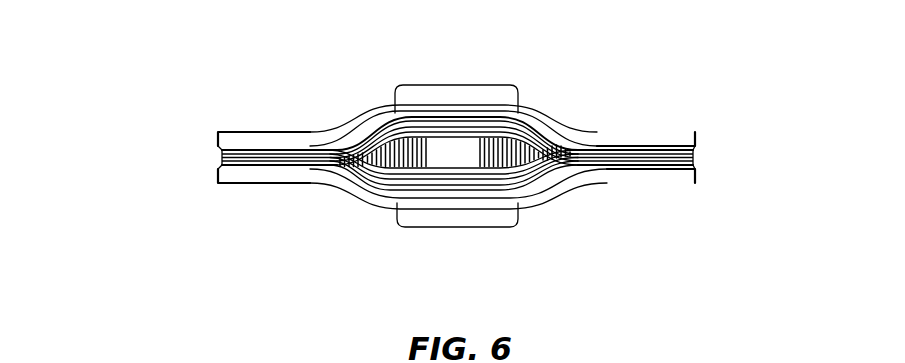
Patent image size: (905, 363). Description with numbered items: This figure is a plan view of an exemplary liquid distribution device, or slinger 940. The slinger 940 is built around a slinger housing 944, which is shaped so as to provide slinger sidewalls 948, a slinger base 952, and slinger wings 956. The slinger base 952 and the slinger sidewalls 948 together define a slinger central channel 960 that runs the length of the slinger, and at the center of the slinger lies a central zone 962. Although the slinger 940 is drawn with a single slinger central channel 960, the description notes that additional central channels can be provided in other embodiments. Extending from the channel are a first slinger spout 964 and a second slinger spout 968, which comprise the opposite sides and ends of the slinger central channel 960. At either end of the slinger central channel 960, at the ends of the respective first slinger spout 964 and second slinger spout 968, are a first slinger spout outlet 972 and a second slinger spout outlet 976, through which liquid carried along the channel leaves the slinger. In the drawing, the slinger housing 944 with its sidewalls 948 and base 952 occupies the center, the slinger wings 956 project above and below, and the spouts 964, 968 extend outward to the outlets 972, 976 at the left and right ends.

The liquid distribution device or slinger 940 is at (438, 167).
The slinger housing 944 is at (566, 130).
The slinger sidewalls 948 is at (350, 123).
The slinger base 952 is at (473, 168).
The slinger wings 956 is at (472, 97).
The slinger central channel 960 is at (502, 159).
The central zone 962 is at (502, 157).
The first slinger spout 964 is at (267, 158).
The second slinger spout 968 is at (645, 158).
The first slinger spout outlet 972 is at (220, 157).
The second slinger spout outlet 976 is at (683, 157).